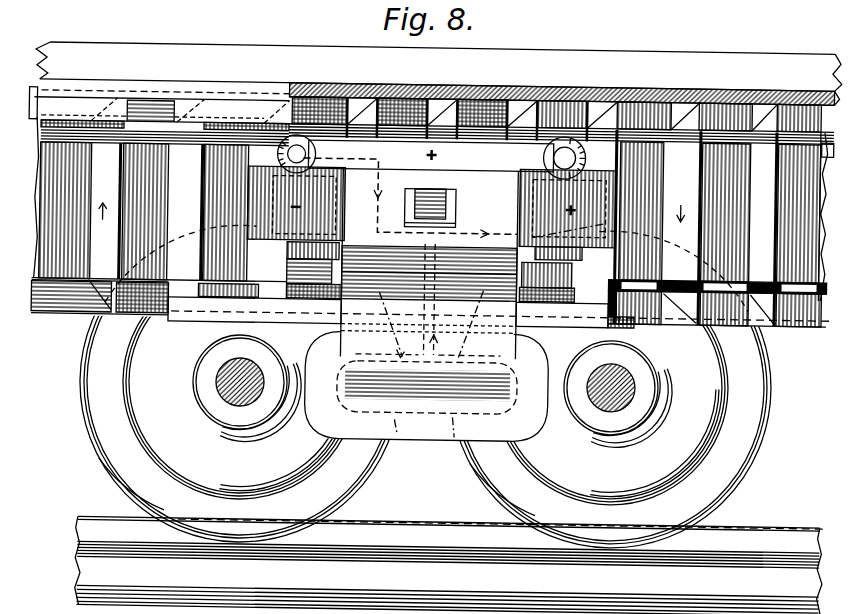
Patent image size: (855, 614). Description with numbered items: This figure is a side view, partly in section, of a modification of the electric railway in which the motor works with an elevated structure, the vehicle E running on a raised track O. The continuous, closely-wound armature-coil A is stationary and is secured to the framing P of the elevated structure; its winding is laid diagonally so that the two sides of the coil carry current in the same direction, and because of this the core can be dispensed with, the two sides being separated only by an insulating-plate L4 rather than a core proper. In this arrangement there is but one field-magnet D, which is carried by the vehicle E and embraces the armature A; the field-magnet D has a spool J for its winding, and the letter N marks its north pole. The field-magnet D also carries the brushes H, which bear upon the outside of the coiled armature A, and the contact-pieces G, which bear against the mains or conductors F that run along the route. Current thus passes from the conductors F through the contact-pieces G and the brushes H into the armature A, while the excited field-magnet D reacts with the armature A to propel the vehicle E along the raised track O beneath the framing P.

The framing P is at (438, 76).
The armature-coil A is at (430, 228).
The mains or conductors F is at (506, 211).
The contact-pieces G is at (273, 155).
The brushes H is at (431, 234).
The field-magnet D is at (409, 258).
The north pole N is at (414, 236).
The spool J is at (426, 386).
The vehicle E is at (426, 385).
The raised track O is at (450, 565).
The insulating-plate L4 is at (808, 217).